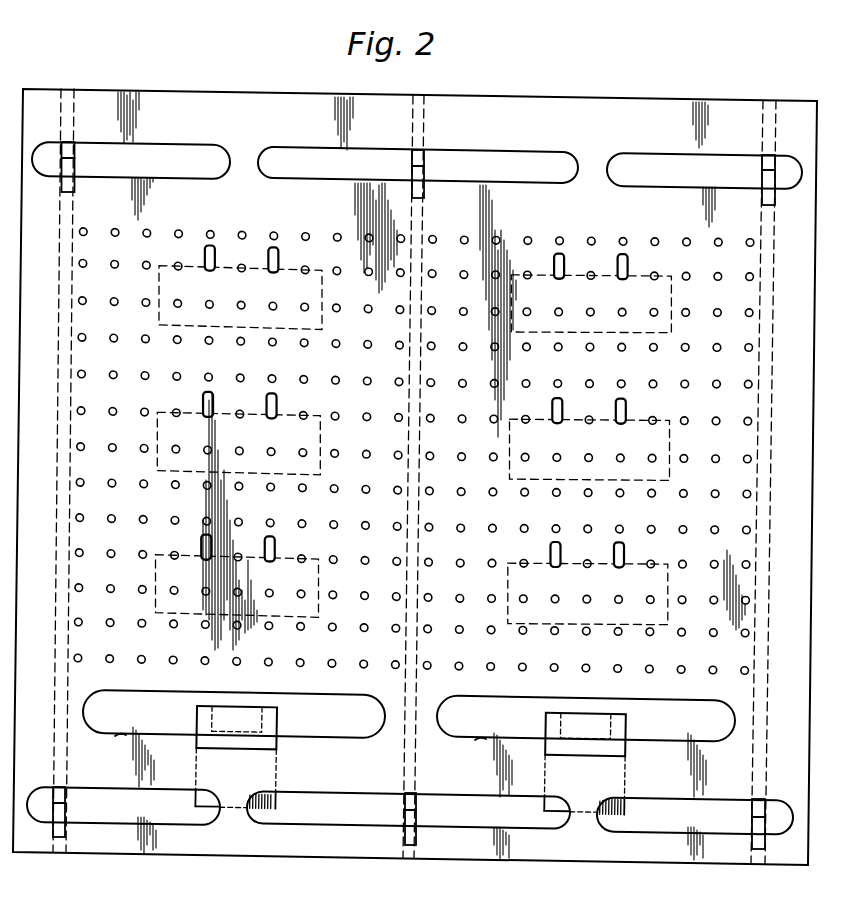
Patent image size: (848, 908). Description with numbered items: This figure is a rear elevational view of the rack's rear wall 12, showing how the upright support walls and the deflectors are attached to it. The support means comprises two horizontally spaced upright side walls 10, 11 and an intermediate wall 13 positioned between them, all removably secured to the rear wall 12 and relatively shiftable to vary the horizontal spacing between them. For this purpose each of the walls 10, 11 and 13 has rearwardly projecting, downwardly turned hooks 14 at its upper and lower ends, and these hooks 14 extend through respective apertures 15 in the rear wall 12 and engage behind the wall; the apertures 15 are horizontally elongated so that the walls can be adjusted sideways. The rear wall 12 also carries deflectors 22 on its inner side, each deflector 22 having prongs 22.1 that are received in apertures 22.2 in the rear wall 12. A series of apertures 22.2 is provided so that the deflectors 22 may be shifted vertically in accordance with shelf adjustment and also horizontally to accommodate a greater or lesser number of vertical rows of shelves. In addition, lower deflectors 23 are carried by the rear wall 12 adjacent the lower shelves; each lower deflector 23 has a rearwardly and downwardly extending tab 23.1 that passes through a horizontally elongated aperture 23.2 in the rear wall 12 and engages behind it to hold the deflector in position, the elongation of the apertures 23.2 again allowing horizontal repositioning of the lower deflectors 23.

The side wall 10 is at (75, 97).
The side wall 11 is at (762, 117).
The rear wall 12 is at (238, 100).
The intermediate wall 13 is at (423, 113).
The hook 14 is at (72, 183).
The aperture 15 is at (174, 154).
The deflector 22 is at (307, 420).
The prong 22.1 is at (622, 257).
The aperture 22.2 is at (494, 308).
The lower deflector 23 is at (279, 717).
The tab 23.1 is at (268, 742).
The aperture 23.2 is at (121, 727).